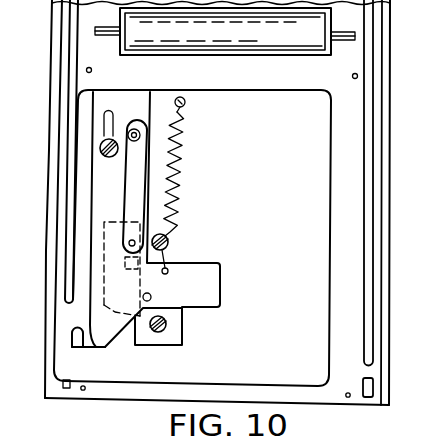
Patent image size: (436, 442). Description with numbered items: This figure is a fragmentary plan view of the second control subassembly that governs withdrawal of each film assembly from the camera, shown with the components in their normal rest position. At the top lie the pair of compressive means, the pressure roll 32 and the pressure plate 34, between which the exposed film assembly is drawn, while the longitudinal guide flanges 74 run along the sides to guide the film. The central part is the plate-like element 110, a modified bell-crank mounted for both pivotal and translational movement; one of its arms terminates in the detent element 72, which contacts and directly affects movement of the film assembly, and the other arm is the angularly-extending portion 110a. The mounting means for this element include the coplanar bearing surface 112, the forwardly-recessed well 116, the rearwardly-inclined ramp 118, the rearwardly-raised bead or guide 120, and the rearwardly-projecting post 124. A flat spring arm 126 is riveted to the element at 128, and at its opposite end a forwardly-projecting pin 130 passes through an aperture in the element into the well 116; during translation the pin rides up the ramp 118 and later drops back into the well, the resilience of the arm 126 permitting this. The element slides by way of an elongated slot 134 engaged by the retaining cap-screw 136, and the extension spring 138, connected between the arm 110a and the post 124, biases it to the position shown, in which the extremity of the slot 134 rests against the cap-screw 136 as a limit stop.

The pressure roll 32 is at (317, 423).
The pressure plate 34 is at (207, 30).
The detent element 72 is at (73, 340).
The longitudinal guide flanges 74 is at (356, 136).
The plate-like element 110 is at (88, 225).
The angularly-extending portion 110a is at (286, 293).
The bearing surface 112 is at (82, 255).
The forwardly-recessed well 116 is at (104, 312).
The rearwardly-inclined ramp 118 is at (118, 263).
The rearwardly-raised bead or guide 120 is at (137, 275).
The rearwardly-projecting post 124 is at (185, 99).
The arm 126 is at (124, 192).
The rivet fastening point 128 is at (136, 128).
The forwardly-projecting pin 130 is at (137, 252).
The elongated slot 134 is at (110, 127).
The retaining stud or cap-screw 136 is at (108, 154).
The extension spring 138 is at (178, 183).